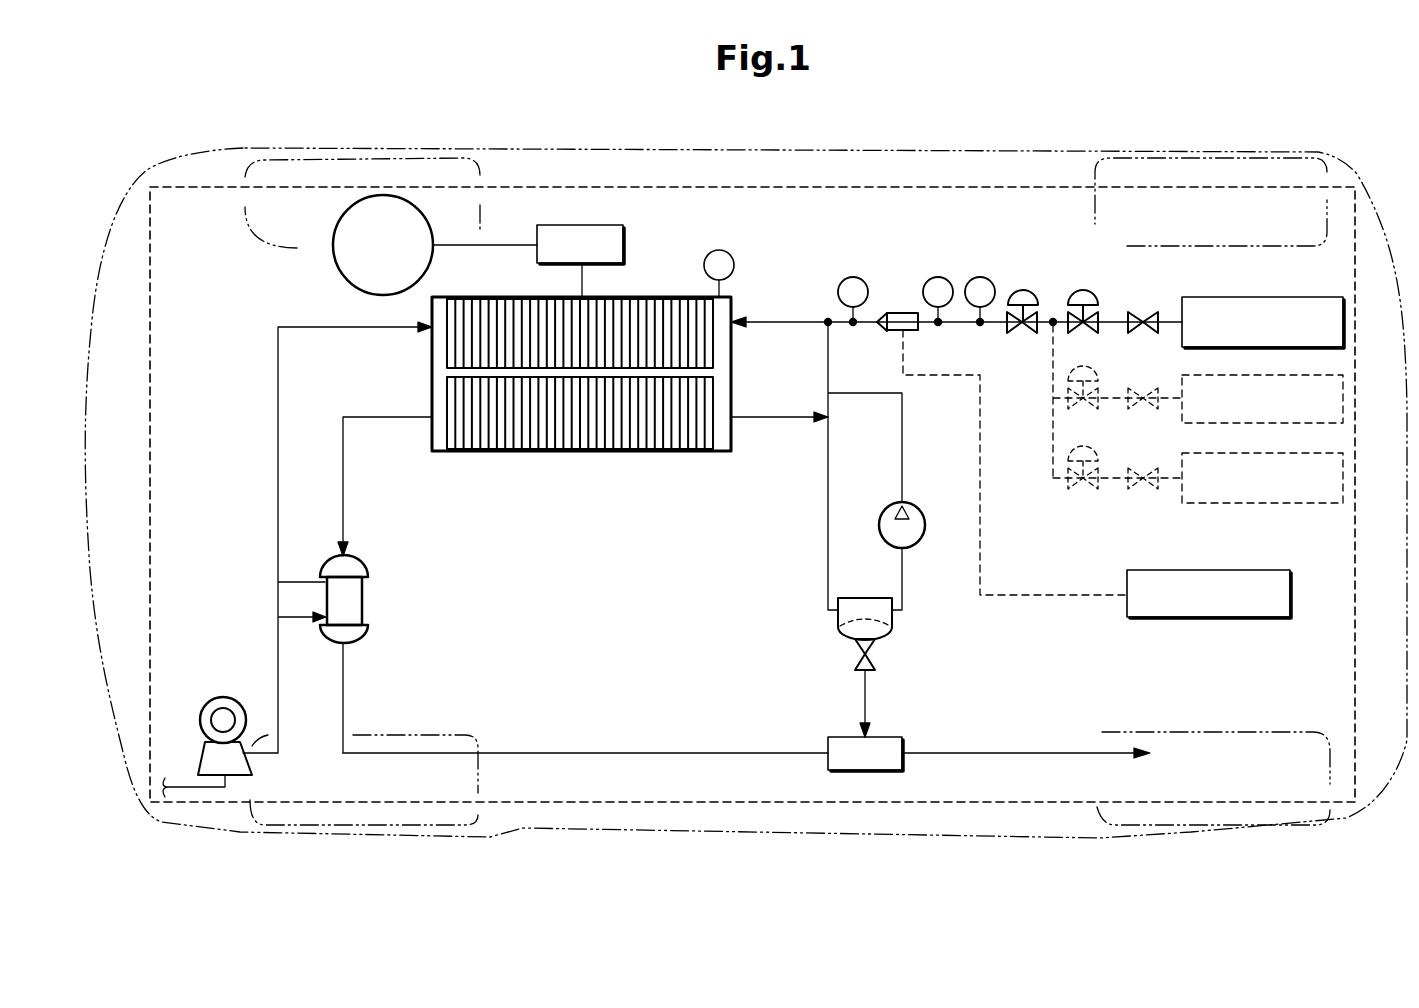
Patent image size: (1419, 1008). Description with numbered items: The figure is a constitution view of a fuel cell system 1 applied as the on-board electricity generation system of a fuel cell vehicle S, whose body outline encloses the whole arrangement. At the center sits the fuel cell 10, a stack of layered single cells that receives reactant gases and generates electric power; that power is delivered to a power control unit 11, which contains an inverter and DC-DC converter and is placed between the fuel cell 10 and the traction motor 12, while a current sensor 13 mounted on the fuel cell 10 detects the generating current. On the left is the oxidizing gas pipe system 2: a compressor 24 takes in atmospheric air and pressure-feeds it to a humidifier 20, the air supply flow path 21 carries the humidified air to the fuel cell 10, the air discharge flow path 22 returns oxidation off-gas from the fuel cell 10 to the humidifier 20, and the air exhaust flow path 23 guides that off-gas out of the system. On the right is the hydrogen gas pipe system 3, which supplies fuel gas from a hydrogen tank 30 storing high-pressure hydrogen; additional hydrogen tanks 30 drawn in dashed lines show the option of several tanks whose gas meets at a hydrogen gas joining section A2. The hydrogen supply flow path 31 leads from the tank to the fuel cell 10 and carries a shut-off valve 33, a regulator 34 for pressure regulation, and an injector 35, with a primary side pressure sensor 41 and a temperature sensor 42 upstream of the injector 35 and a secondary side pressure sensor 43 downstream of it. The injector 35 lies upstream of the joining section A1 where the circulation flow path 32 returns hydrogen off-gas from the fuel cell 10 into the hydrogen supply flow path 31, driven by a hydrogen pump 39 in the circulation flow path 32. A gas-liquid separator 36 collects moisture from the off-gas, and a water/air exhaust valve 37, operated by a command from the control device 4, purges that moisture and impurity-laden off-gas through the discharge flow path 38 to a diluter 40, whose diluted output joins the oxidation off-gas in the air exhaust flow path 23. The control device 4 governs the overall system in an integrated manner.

The fuel cell system 1 is at (560, 185).
The fuel cell vehicle S is at (1038, 150).
The oxidizing gas pipe system 2 is at (307, 559).
The hydrogen gas pipe system 3 is at (812, 598).
The control device 4 is at (1205, 570).
The fuel cell 10 is at (680, 452).
The power control unit 11 is at (623, 250).
The traction motor 12 is at (333, 255).
The current sensor 13 is at (719, 250).
The humidifier 20 is at (365, 610).
The air supply flow path 21 is at (278, 530).
The air discharge flow path 22 is at (345, 512).
The air exhaust flow path 23 is at (768, 753).
The compressor 24 is at (237, 700).
The hydrogen tank 30 is at (1295, 297).
The hydrogen supply flow path 31 is at (782, 322).
The circulation flow path 32 is at (828, 562).
The shut-off valve 33 is at (1143, 312).
The regulator 34 is at (1025, 290).
The injector 35 is at (893, 313).
The gas-liquid separator 36 is at (850, 598).
The water/air exhaust valve 37 is at (855, 658).
The discharge flow path 38 is at (867, 695).
The hydrogen pump 39 is at (920, 507).
The diluter 40 is at (905, 745).
The primary side pressure sensor 41 is at (938, 277).
The temperature sensor 42 is at (980, 277).
The secondary side pressure sensor 43 is at (853, 277).
The joining section A1 is at (828, 324).
The hydrogen gas joining section A2 is at (1053, 324).